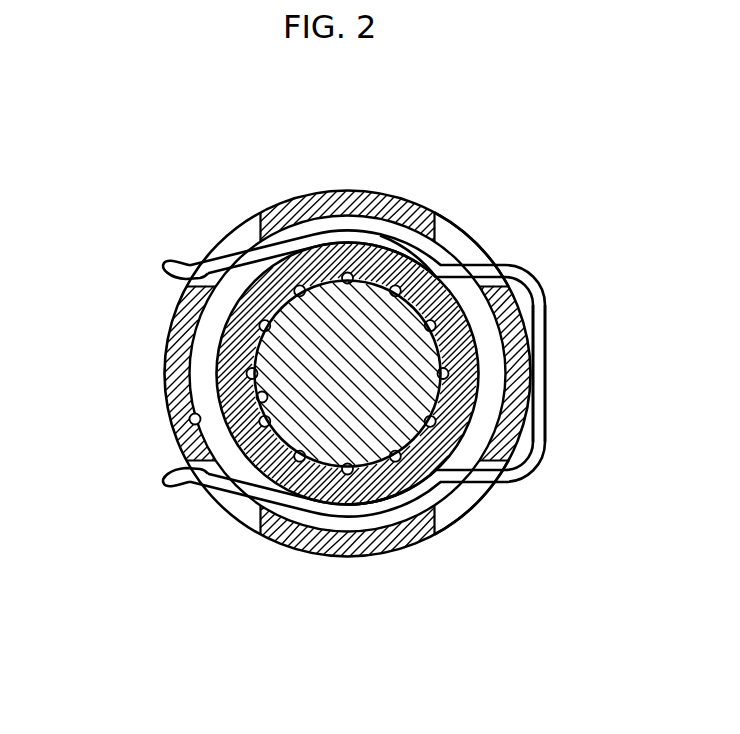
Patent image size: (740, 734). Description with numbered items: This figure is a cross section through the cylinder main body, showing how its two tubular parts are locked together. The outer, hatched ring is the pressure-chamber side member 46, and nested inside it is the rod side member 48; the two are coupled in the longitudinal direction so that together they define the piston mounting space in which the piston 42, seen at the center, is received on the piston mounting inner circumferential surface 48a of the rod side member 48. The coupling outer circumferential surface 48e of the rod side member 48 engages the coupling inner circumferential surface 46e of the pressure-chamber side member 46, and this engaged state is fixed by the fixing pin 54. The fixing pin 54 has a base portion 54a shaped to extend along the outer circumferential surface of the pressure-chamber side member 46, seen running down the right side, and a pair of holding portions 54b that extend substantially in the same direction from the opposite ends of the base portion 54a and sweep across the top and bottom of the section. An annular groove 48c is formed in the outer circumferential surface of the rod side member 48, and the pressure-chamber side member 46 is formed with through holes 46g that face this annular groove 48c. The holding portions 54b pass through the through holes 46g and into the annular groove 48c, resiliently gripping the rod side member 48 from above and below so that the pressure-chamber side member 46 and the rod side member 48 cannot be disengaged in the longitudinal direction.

The piston 42 is at (343, 424).
The pressure-chamber side member 46 is at (513, 432).
The coupling inner circumferential surface 46e is at (190, 420).
The through holes 46g is at (456, 236).
The rod side member 48 is at (232, 344).
The piston mounting inner circumferential surface 48a is at (257, 398).
The annular groove 48c is at (372, 524).
The coupling outer circumferential surface 48e is at (418, 226).
The fixing pin 54 is at (518, 262).
The base portion 54a is at (548, 371).
The holding portions 54b is at (346, 233).